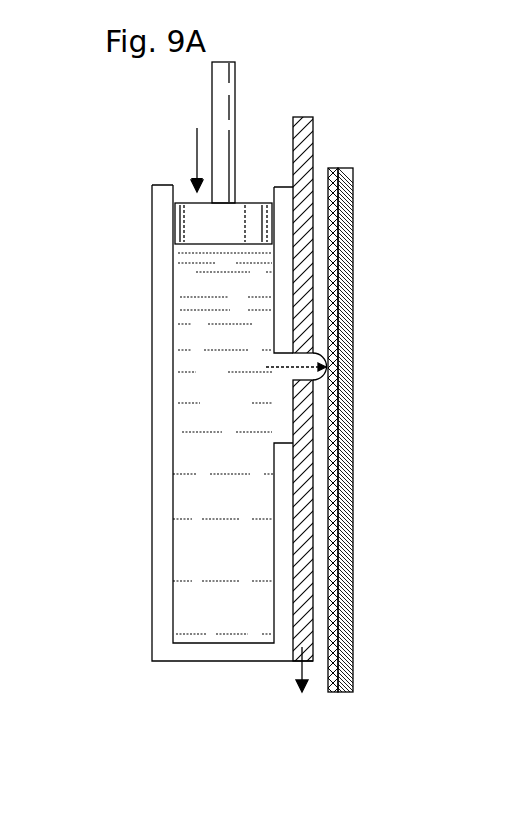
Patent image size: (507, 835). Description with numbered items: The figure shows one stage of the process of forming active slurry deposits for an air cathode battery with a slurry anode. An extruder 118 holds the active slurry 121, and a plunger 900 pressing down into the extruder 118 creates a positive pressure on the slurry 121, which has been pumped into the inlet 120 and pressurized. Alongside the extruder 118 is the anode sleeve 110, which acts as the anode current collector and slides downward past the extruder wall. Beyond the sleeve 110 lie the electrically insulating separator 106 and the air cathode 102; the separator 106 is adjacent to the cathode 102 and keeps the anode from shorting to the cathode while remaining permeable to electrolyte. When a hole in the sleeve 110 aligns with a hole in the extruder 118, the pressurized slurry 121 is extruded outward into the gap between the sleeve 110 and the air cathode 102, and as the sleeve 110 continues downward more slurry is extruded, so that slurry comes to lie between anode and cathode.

The plunger 900 is at (236, 98).
The inlet 120 is at (178, 173).
The anode sleeve 110 is at (316, 127).
The separator 106 is at (333, 168).
The air cathode 102 is at (353, 186).
The extruder 118 is at (152, 358).
The active slurry 121 is at (247, 423).